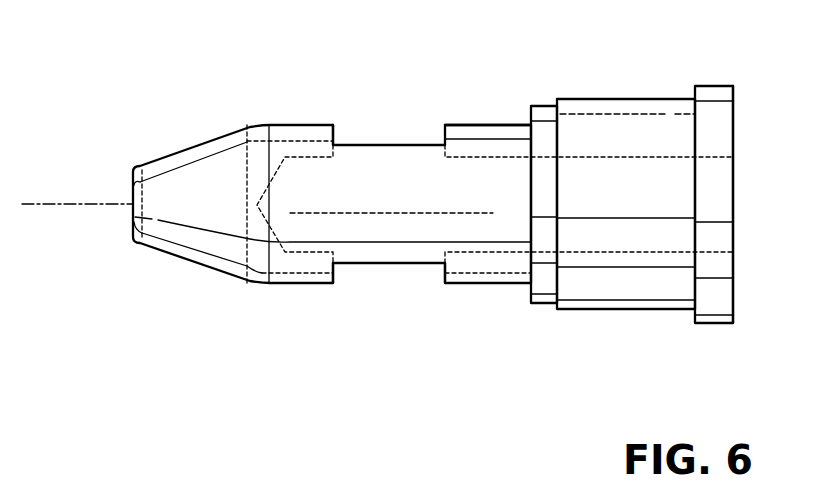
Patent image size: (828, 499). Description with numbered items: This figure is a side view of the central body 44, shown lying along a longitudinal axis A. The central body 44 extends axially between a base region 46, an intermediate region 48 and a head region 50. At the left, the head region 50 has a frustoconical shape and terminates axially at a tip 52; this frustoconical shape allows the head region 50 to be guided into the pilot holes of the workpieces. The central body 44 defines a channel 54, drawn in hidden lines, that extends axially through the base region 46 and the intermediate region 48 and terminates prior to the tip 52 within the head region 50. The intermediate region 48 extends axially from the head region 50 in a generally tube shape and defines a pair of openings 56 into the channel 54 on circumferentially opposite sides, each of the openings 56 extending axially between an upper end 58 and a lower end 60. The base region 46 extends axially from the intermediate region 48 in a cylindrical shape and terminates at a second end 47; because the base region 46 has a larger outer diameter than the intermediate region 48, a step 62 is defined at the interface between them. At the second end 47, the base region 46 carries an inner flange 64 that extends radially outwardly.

The central body 44 is at (217, 291).
The base region 46 is at (650, 134).
The second end 47 is at (735, 294).
The intermediate region 48 is at (456, 134).
The head region 50 is at (208, 153).
The tip 52 is at (130, 222).
The channel 54 is at (482, 155).
The openings 56 is at (334, 132).
The upper end 58 is at (336, 280).
The lower end 60 is at (445, 268).
The step 62 is at (524, 296).
The inner flange 64 is at (713, 92).
The longitudinal axis A is at (56, 203).